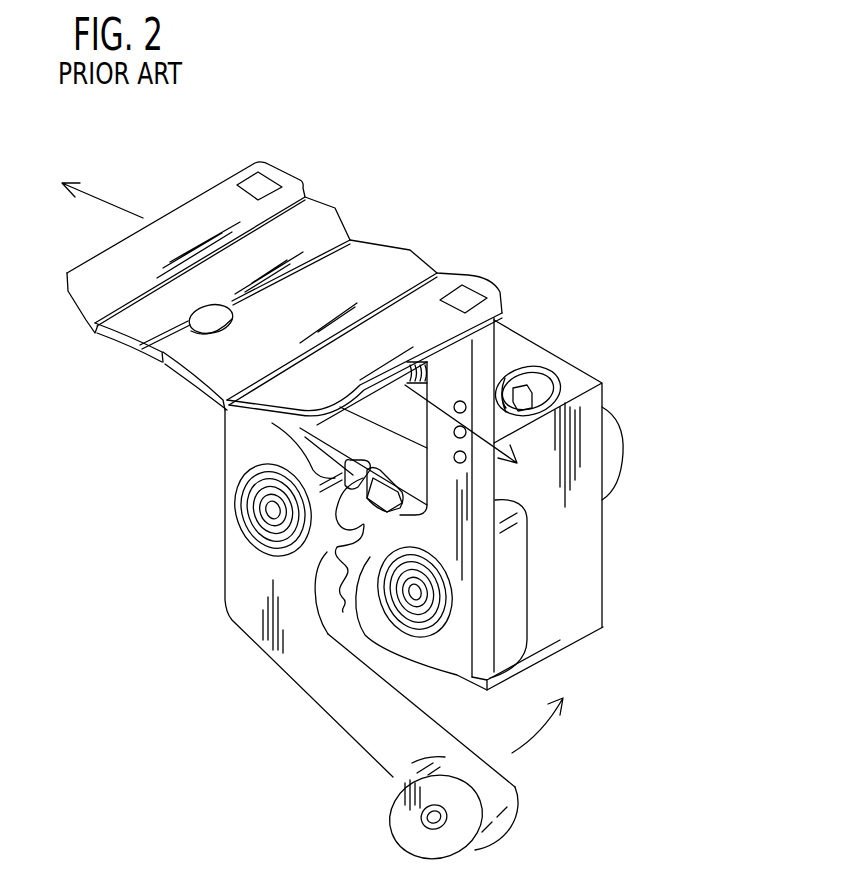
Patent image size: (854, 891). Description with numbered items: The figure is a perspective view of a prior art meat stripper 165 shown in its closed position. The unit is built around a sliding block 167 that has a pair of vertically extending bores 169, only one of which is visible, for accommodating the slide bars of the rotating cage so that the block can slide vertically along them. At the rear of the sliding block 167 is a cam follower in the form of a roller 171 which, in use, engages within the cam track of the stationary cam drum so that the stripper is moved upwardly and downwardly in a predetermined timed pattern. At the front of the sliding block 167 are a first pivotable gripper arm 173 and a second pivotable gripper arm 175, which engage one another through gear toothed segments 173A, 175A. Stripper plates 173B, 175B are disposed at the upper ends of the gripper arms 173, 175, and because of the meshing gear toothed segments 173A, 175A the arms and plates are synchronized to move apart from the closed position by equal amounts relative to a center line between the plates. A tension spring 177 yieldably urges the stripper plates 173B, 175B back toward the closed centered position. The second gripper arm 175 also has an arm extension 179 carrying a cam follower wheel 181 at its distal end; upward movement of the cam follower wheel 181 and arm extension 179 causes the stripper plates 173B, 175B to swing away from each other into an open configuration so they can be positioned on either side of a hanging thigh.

The meat stripper 165 is at (668, 602).
The sliding block 167 is at (578, 552).
The vertically extending bores 169 is at (537, 392).
The roller 171 is at (620, 447).
The first pivotable gripper arm 173 is at (438, 543).
The gear toothed segment 173A is at (370, 557).
The stripper plate 173B is at (375, 268).
The second pivotable gripper arm 175 is at (247, 570).
The gear toothed segment 175A is at (325, 552).
The stripper plate 175B is at (307, 232).
The tension spring 177 is at (427, 364).
The arm extension 179 is at (347, 737).
The cam follower wheel 181 is at (400, 830).